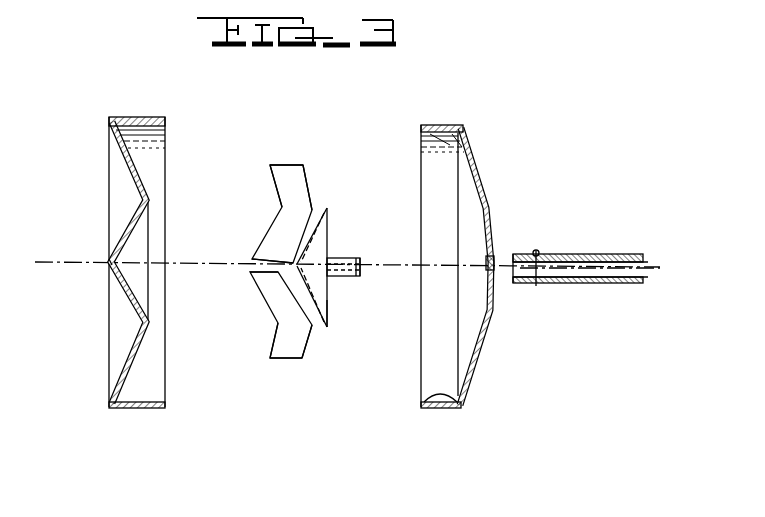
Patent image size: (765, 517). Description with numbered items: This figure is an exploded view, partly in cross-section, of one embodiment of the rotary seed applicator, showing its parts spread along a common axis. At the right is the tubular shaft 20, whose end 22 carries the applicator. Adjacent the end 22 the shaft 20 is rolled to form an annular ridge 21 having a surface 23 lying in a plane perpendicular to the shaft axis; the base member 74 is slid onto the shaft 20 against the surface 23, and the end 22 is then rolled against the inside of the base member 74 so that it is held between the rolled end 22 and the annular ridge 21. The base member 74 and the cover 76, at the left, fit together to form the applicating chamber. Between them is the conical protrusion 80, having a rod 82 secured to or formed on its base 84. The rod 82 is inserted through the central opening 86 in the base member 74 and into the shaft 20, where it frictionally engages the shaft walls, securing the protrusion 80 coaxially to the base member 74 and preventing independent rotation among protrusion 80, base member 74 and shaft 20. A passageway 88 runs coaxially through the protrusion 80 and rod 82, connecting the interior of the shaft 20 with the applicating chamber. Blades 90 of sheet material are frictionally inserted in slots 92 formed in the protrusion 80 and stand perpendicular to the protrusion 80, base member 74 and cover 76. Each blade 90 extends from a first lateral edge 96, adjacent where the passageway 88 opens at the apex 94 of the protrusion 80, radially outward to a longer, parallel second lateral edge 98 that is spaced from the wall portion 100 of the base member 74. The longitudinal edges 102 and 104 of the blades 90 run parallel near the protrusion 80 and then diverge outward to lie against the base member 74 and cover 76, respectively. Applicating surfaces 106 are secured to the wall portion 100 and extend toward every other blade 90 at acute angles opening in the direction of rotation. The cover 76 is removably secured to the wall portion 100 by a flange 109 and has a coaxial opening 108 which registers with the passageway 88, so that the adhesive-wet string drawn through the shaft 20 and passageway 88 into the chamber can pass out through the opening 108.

The shaft 20 is at (571, 254).
The annular ridge 21 is at (537, 284).
The end of shaft 22 is at (513, 279).
The surface 23 is at (534, 284).
The base member 74 is at (489, 208).
The cover 76 is at (108, 144).
The conical protrusion 80 is at (313, 223).
The rod 82 is at (362, 277).
The base of protrusion 84 is at (329, 230).
The central opening 86 is at (491, 257).
The passageway 88 is at (381, 262).
The blades 90 is at (273, 162).
The slots 92 is at (314, 321).
The apex 94 is at (293, 262).
The first lateral edge 96 is at (250, 271).
The second lateral edge 98 is at (290, 164).
The wall portion 100 is at (470, 148).
The longitudinal edge 102 is at (308, 172).
The longitudinal edge 104 is at (281, 208).
The applicating surfaces 106 is at (421, 394).
The coaxial opening 108 is at (107, 264).
The flange 109 is at (140, 409).